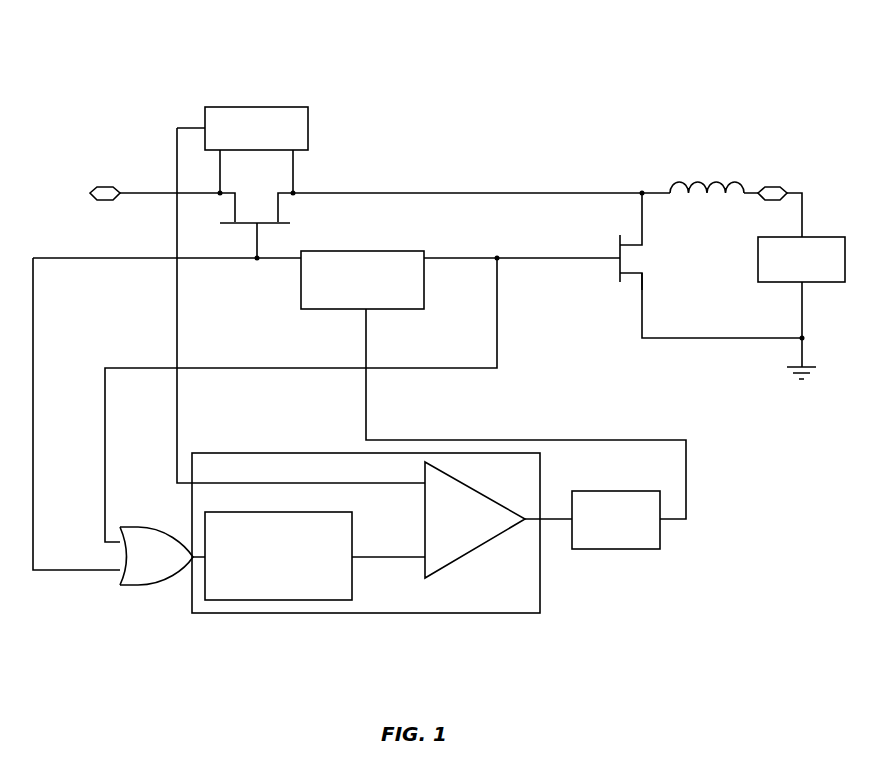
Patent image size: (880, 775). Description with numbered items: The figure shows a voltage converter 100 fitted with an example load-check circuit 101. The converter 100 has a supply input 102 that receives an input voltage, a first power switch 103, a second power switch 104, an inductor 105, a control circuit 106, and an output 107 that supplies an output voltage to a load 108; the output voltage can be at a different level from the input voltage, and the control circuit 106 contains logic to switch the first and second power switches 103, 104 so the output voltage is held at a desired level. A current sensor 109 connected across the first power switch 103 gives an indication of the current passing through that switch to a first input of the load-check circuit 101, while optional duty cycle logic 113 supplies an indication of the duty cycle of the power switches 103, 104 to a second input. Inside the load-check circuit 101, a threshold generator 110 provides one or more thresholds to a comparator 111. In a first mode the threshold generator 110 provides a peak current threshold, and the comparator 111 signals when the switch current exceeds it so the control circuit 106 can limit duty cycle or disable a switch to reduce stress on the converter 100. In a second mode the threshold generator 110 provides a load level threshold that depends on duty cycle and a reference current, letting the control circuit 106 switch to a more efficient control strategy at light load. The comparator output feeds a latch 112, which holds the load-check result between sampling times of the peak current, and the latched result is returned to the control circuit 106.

The voltage converter 100 is at (380, 60).
The load-check circuit 101 is at (337, 613).
The supply input 102 is at (103, 200).
The first power switch 103 is at (290, 223).
The second power switch 104 is at (617, 245).
The inductor 105 is at (716, 182).
The control circuit 106 is at (330, 309).
The output 107 is at (774, 200).
The load 108 is at (818, 282).
The current sensor 109 is at (308, 121).
The threshold generator 110 is at (266, 512).
The comparator 111 is at (460, 557).
The latch 112 is at (584, 491).
The duty cycle logic 113 is at (150, 585).